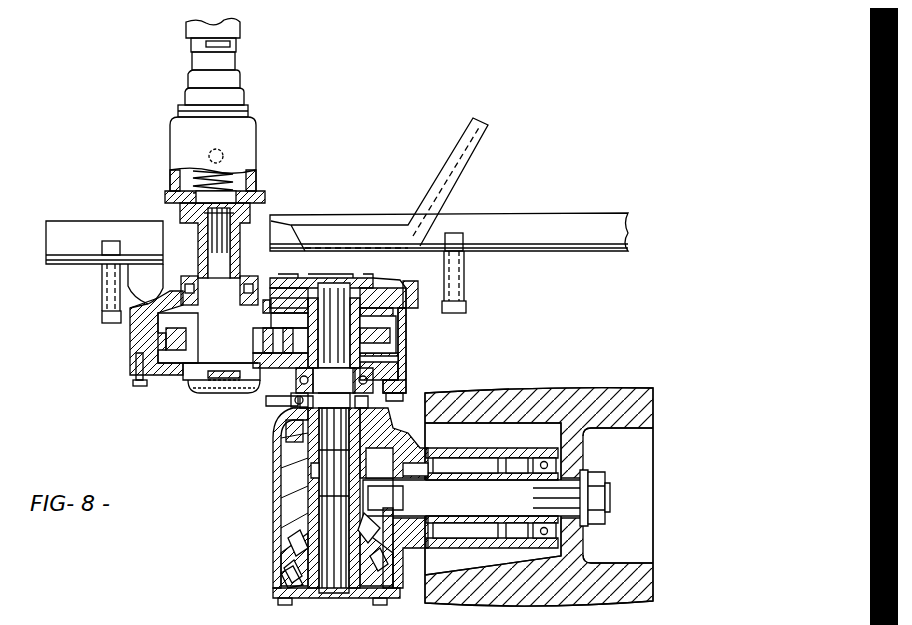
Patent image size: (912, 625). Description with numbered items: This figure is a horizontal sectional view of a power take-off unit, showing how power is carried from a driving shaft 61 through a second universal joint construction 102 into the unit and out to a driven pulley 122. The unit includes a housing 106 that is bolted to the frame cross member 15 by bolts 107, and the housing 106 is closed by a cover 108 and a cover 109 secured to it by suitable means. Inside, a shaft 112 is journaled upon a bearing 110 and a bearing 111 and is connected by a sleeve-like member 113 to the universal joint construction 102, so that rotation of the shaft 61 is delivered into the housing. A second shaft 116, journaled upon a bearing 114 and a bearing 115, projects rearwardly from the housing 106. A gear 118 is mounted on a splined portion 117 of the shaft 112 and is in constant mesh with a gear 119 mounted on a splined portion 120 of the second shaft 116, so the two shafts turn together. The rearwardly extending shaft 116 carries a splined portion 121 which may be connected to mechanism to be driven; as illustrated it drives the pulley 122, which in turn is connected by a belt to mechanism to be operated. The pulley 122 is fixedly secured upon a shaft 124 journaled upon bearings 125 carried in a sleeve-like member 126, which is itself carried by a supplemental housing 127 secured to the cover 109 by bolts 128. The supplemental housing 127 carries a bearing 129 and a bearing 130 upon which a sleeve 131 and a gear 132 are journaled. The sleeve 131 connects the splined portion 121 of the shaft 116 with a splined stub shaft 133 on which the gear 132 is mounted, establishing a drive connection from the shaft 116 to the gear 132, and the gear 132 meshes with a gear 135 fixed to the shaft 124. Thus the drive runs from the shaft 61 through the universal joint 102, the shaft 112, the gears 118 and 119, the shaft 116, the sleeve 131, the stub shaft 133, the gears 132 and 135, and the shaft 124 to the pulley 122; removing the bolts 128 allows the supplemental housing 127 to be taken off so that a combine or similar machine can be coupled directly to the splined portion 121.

The shaft 61 is at (232, 22).
The second universal joint construction 102 is at (248, 120).
The sleeve-like member 113 is at (248, 215).
The frame cross member 15 is at (580, 236).
The bolts 107 is at (94, 308).
The housing 106 is at (125, 320).
The gear 118 is at (158, 332).
The cover 109 is at (125, 370).
The shaft 112 is at (190, 262).
The bearing 111 is at (185, 360).
The splined portion 117 is at (210, 372).
The splined portion 120 is at (322, 282).
The cover 108 is at (262, 292).
The bearing 110 is at (313, 353).
The bearing 114 is at (380, 290).
The gear 119 is at (386, 327).
The bearing 115 is at (390, 350).
The bolts 128 is at (395, 388).
The splined portion 121 is at (300, 458).
The second shaft 116 is at (278, 415).
The bearing 129 is at (300, 440).
The sleeve 131 is at (311, 480).
The splined stub shaft 133 is at (305, 500).
The supplemental housing 127 is at (273, 548).
The gear 132 is at (275, 560).
The bearing 130 is at (275, 578).
The gear 135 is at (392, 575).
The shaft 124 is at (476, 495).
The bearings 125 is at (520, 447).
The sleeve-like member 126 is at (488, 557).
The pulley 122 is at (645, 383).